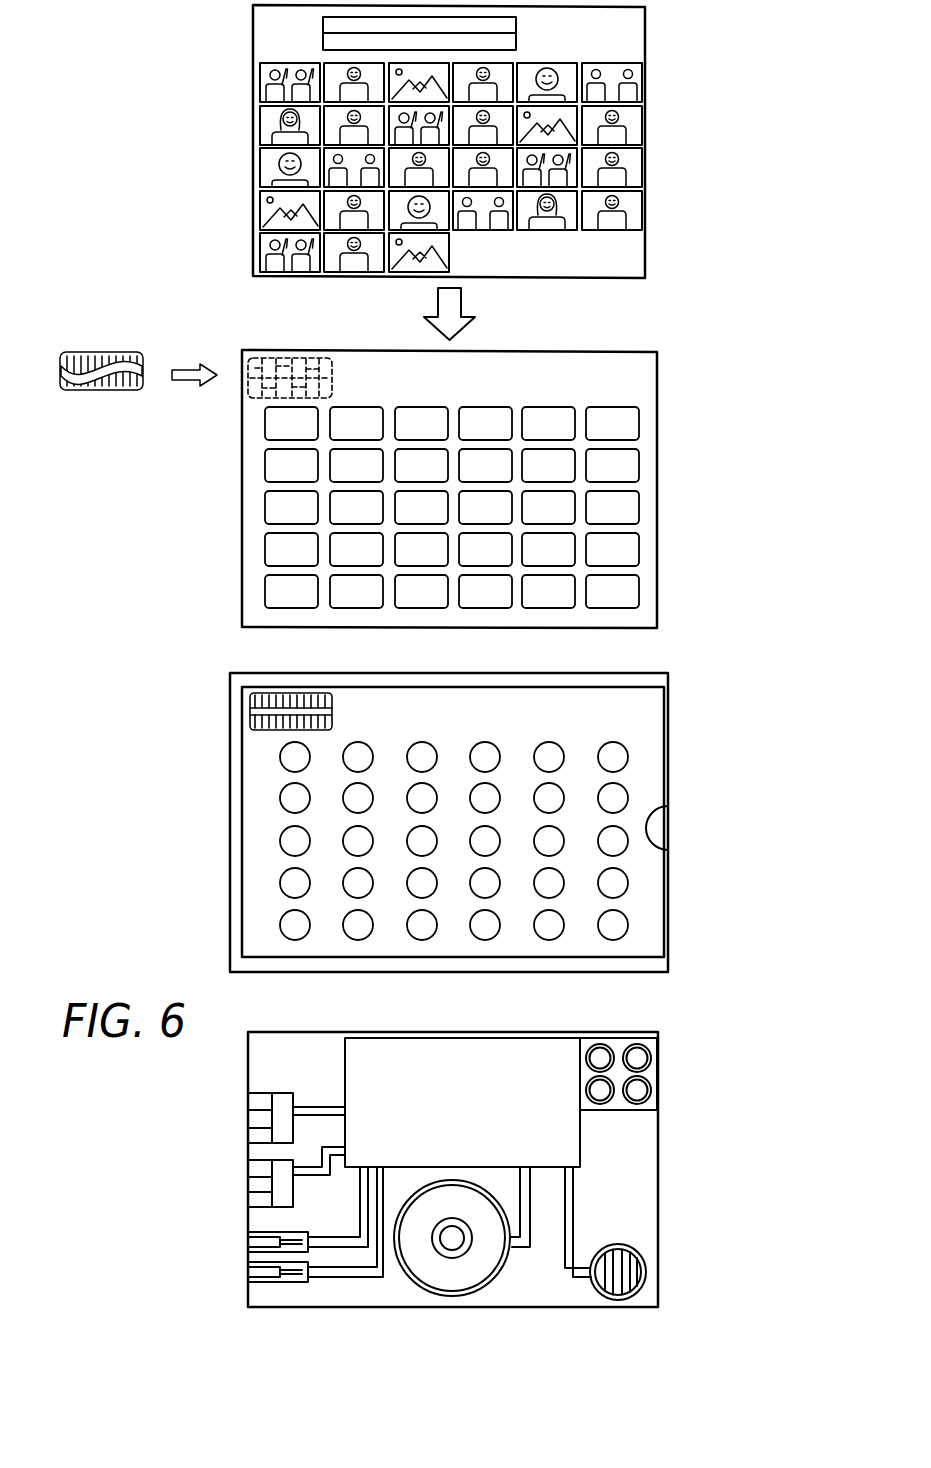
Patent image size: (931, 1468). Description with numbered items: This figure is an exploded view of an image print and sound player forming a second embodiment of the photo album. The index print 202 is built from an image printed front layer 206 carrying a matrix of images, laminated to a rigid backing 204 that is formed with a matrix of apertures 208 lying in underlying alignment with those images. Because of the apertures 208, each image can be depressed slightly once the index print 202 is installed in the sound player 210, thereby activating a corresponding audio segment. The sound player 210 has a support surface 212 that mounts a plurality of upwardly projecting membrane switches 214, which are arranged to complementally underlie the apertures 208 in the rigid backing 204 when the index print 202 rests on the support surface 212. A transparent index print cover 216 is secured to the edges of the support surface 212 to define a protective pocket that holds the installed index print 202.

The index print 202 is at (742, 4).
The rigid backing 204 is at (659, 492).
The image printed front layer 206 is at (648, 212).
The apertures 208 is at (265, 507).
The sound player 210 is at (763, 663).
The support surface 212 is at (663, 830).
The membrane switches 214 is at (628, 797).
The transparent index print cover 216 is at (625, 718).